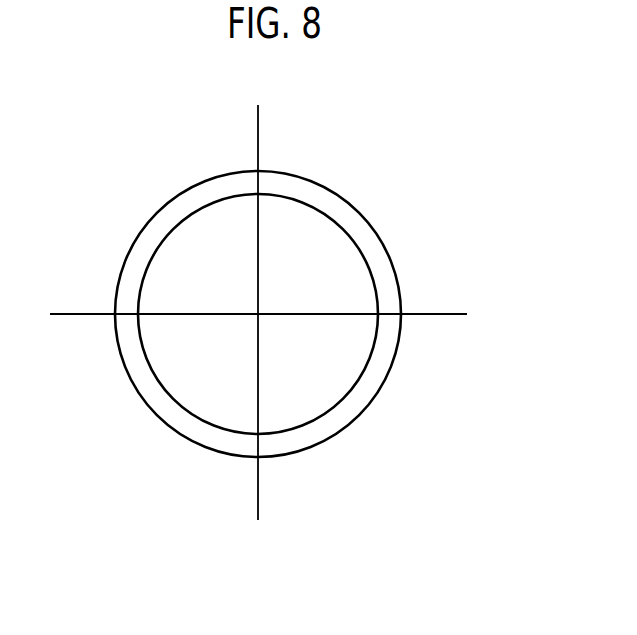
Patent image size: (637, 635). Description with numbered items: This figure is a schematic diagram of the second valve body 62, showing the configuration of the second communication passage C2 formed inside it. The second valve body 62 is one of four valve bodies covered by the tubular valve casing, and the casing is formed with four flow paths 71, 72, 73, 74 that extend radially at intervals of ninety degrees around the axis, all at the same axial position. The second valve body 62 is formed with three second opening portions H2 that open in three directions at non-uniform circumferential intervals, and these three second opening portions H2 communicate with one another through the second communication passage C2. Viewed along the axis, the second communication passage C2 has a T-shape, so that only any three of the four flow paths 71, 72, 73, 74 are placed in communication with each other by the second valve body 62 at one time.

The second valve body 62 is at (317, 253).
The flow path 71 is at (258, 123).
The flow path 72 is at (258, 503).
The flow path 73 is at (448, 312).
The flow path 74 is at (62, 317).
The second opening portion H2 is at (263, 192).
The second communication passage C2 is at (300, 314).